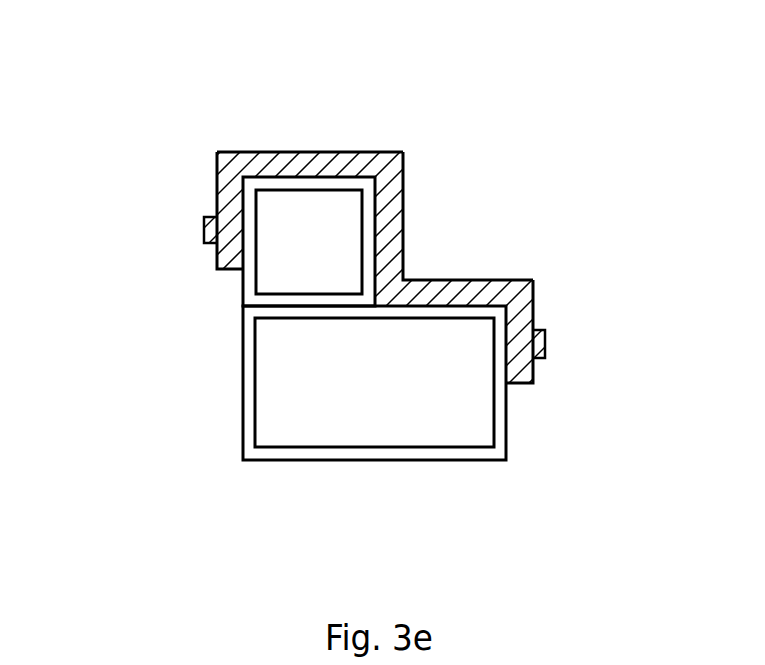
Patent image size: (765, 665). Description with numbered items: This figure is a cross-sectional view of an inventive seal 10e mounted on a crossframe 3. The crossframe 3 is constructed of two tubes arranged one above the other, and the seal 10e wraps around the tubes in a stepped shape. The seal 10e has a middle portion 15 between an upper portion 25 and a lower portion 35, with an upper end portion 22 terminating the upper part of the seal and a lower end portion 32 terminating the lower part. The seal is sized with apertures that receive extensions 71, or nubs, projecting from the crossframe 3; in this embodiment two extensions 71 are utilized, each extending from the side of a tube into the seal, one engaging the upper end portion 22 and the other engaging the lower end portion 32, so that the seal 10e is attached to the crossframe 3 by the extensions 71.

The seal 10e is at (382, 294).
The middle portion 15 is at (382, 213).
The upper end portion 22 is at (227, 194).
The upper portion 25 is at (311, 165).
The lower portion 35 is at (470, 274).
The lower end portion 32 is at (532, 313).
The crossframe 3 is at (225, 295).
The extension 71 is at (185, 236).